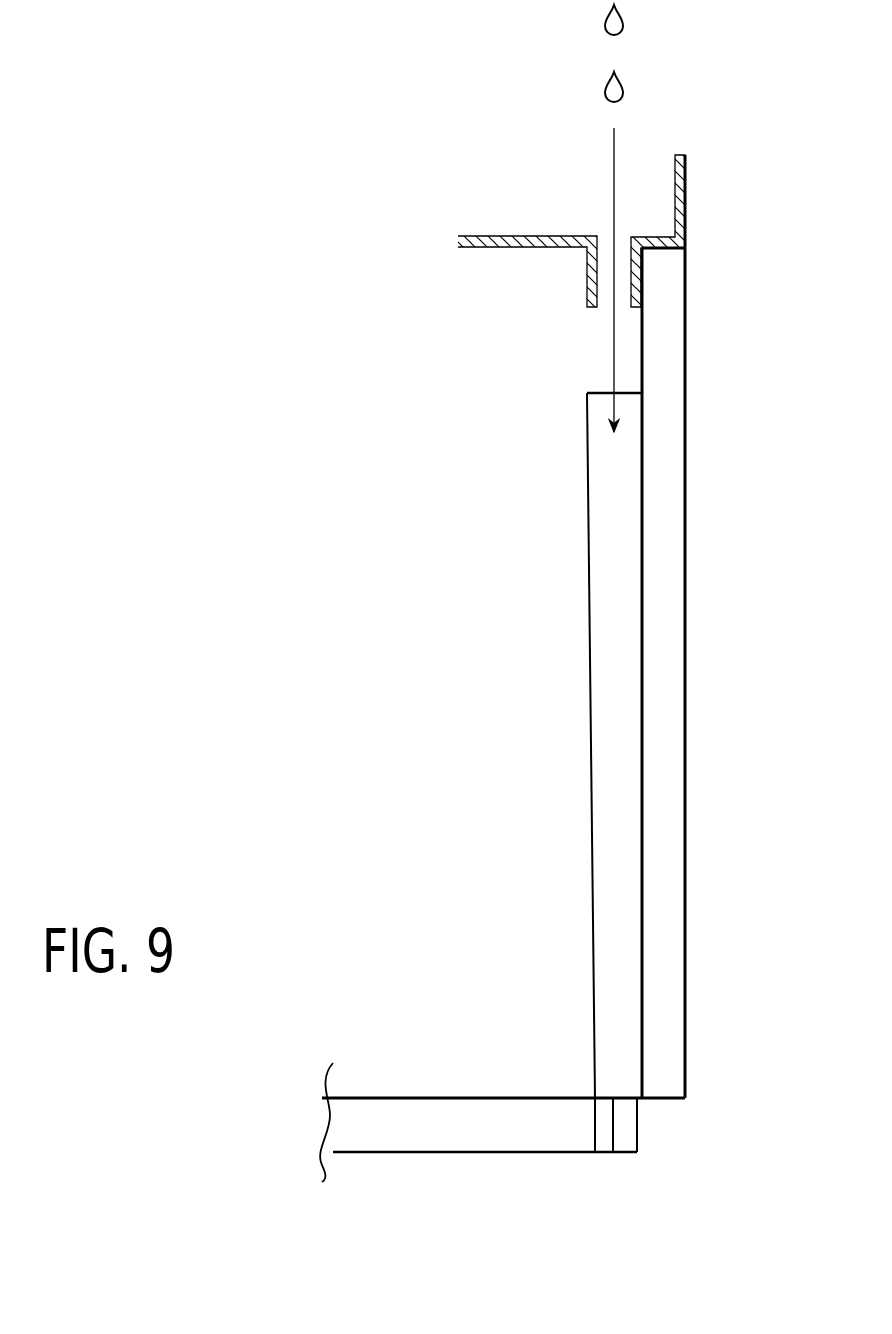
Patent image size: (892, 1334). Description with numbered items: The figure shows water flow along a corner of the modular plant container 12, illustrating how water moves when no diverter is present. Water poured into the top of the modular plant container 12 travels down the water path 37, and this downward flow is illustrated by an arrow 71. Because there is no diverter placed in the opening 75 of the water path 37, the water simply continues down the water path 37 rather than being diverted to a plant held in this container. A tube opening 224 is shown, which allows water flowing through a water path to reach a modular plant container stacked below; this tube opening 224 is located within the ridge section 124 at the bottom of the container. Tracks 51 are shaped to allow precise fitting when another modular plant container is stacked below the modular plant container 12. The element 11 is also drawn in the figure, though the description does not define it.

The appliance assembly 12 is at (318, 130).
The housing 11 is at (724, 815).
The water flow path 71 is at (612, 167).
The guide bracket 224 is at (586, 284).
The channel wall 37 is at (670, 562).
The drain plate 75 is at (570, 348).
The base 51 is at (473, 1138).
The base slot 124 is at (622, 1082).